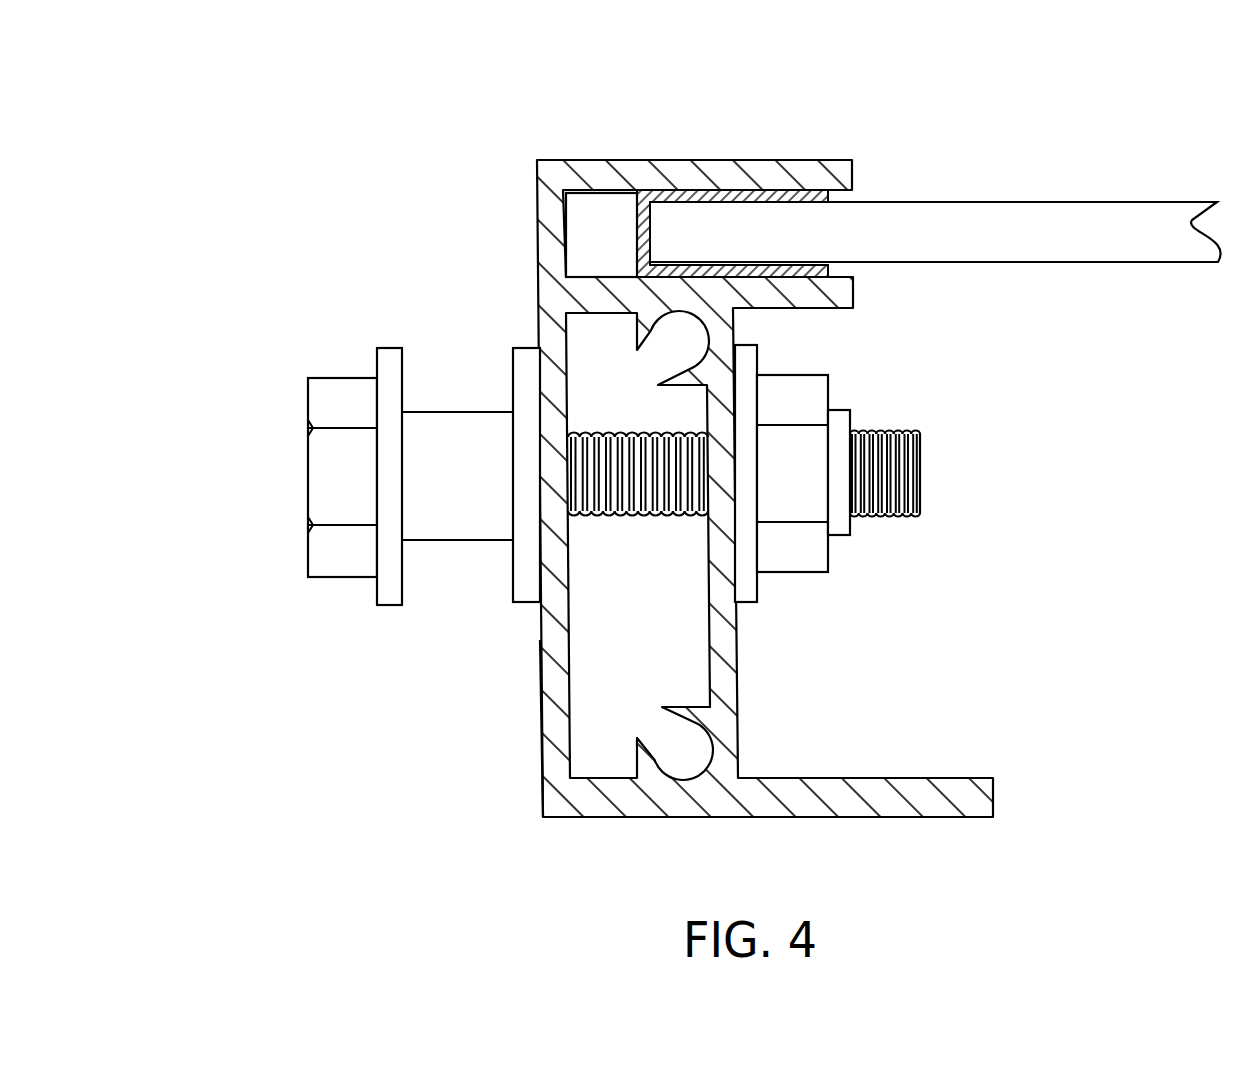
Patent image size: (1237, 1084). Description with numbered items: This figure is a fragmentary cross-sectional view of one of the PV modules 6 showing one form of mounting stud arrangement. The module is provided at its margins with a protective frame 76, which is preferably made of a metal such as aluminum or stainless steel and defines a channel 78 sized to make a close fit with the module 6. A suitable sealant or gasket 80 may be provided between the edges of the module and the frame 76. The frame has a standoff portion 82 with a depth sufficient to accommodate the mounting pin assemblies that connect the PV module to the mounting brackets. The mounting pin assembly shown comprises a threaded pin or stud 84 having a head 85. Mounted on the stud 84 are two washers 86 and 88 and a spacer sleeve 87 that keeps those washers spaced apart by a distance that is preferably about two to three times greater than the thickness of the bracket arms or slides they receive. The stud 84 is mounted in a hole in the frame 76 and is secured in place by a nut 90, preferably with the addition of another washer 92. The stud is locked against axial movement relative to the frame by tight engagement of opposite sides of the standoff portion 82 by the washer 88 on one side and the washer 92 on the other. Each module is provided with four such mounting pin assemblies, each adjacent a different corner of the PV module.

The panel 6 is at (990, 181).
The protective frame 76 is at (514, 253).
The channel 78 is at (597, 228).
The sealant or gasket 80 is at (738, 190).
The standoff portion 82 is at (542, 750).
The threaded pin or stud 84 is at (920, 473).
The head 85 is at (293, 442).
The washer 86 is at (372, 597).
The spacer sleeve 87 is at (472, 408).
The washer 88 is at (513, 593).
The nut 90 is at (797, 573).
The washer 92 is at (830, 390).